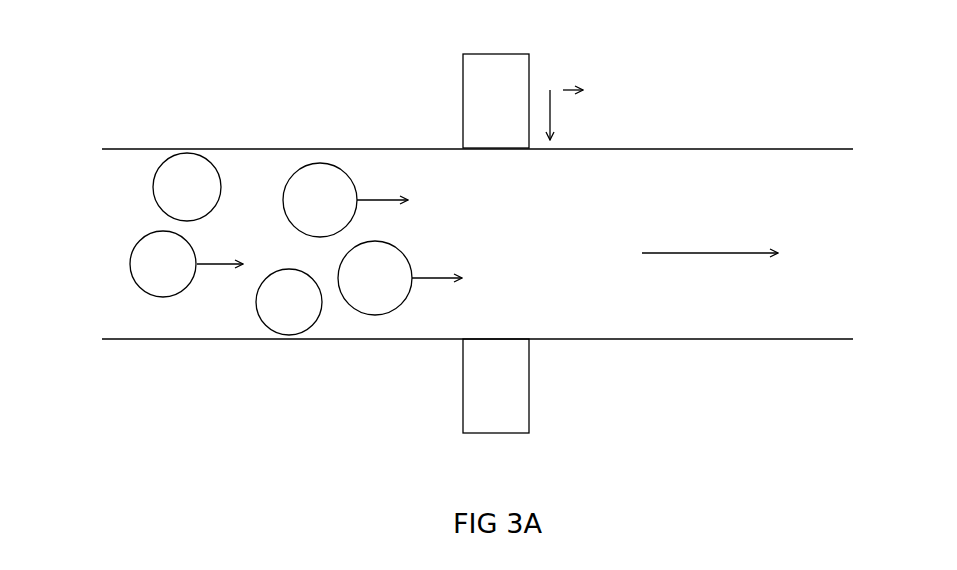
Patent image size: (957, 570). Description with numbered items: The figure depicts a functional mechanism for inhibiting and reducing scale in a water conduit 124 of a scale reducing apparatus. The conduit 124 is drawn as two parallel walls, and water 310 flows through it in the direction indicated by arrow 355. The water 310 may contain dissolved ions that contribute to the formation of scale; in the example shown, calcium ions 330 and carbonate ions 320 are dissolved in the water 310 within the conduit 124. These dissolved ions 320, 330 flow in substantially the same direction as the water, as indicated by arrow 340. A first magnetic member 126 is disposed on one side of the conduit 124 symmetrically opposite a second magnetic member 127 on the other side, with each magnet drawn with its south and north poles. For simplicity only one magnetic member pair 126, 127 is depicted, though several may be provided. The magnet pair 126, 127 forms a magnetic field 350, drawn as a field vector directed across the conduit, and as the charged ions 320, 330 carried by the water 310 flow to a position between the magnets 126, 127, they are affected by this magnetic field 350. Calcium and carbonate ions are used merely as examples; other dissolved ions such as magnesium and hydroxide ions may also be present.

The water conduit 124 is at (683, 340).
The first magnetic member 126 is at (485, 54).
The second magnetic member 127 is at (529, 420).
The water 310 is at (153, 190).
The carbonate ions 320 is at (298, 170).
The calcium ions 330 is at (178, 296).
The arrow indicating ion flow direction 340 is at (365, 200).
The magnetic field 350 is at (589, 106).
The arrow indicating water flow direction 355 is at (687, 253).